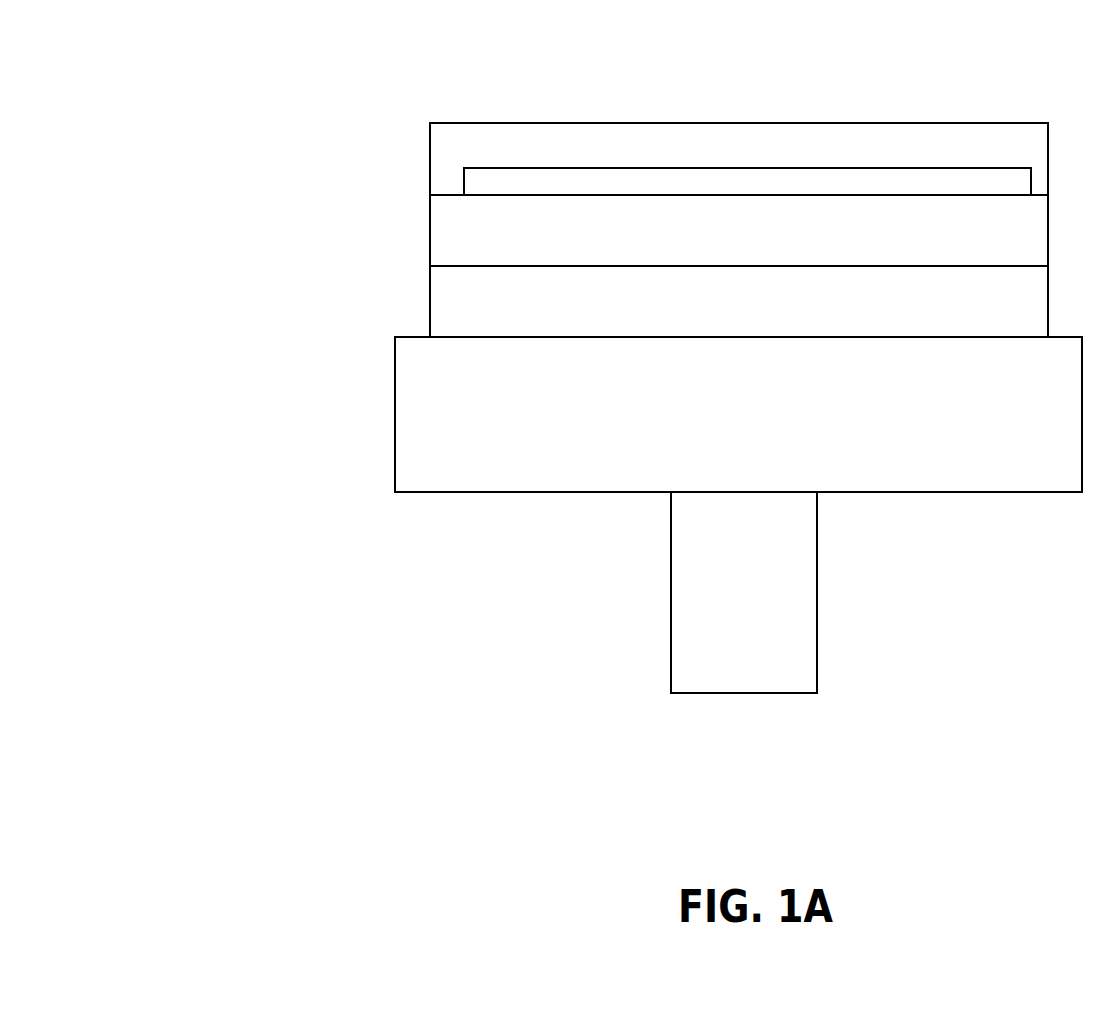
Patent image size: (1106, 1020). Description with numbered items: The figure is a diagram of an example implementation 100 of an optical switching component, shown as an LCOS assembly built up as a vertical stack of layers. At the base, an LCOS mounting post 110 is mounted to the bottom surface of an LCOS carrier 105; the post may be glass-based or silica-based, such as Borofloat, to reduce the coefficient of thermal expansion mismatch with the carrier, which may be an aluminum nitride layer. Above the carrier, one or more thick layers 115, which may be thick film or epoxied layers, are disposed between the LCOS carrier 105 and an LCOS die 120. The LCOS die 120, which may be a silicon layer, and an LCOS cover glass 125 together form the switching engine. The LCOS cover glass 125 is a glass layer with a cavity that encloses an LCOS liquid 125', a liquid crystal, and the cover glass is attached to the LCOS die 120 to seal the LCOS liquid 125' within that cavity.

The example implementation 100 is at (249, 23).
The LCOS carrier 105 is at (758, 439).
The LCOS mounting post 110 is at (762, 644).
The thick layers 115 is at (758, 327).
The LCOS die 120 is at (758, 254).
The LCOS cover glass 125 is at (739, 159).
The LCOS liquid 125' is at (747, 181).